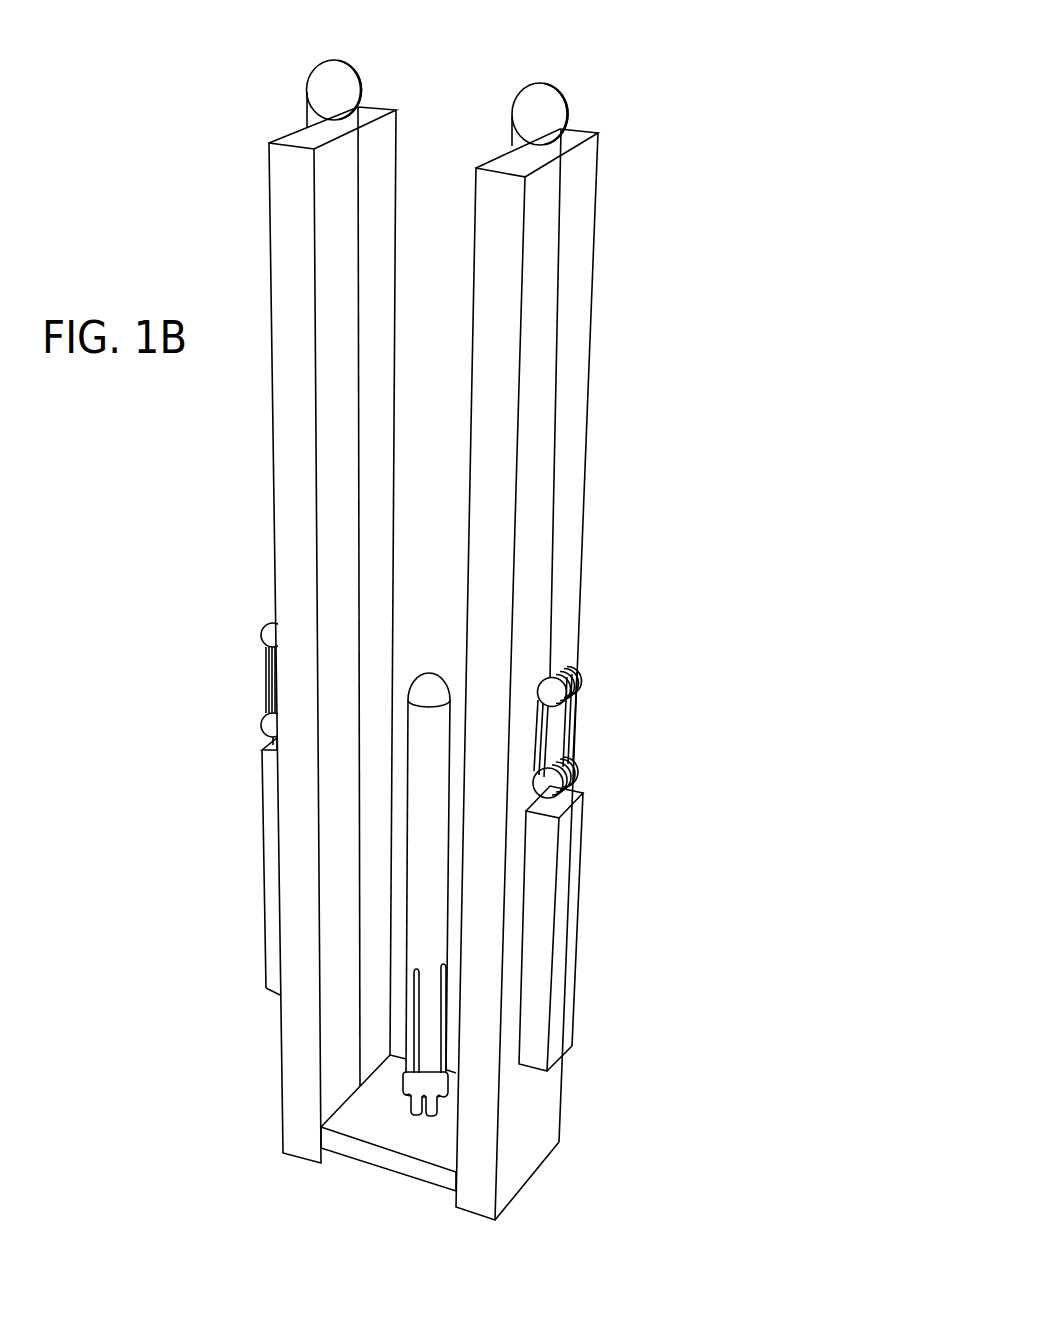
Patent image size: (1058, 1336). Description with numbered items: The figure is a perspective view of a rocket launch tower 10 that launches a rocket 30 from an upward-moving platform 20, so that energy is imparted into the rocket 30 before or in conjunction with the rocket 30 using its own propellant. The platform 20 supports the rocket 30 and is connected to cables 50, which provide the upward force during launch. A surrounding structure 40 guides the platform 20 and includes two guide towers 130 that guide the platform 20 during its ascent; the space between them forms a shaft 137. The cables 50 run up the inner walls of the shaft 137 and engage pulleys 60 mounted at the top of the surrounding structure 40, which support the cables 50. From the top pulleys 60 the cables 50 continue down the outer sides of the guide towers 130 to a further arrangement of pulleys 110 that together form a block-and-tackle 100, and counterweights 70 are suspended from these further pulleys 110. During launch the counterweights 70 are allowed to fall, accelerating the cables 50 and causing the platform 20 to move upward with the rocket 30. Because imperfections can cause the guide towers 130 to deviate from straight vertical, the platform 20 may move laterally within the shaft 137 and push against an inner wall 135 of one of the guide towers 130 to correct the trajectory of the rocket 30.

The rocket launch tower 10 is at (712, 118).
The platform 20 is at (384, 1157).
The rocket 30 is at (432, 680).
The surrounding structure 40 is at (640, 482).
The cables 50 is at (361, 184).
The pulleys 60 is at (337, 62).
The counterweights 70 is at (262, 858).
The block-and-tackle 100 is at (265, 677).
The further arrangement of pulleys 110 is at (583, 678).
The guide towers 130 is at (268, 193).
The inner wall 135 is at (378, 290).
The shaft 137 is at (468, 60).